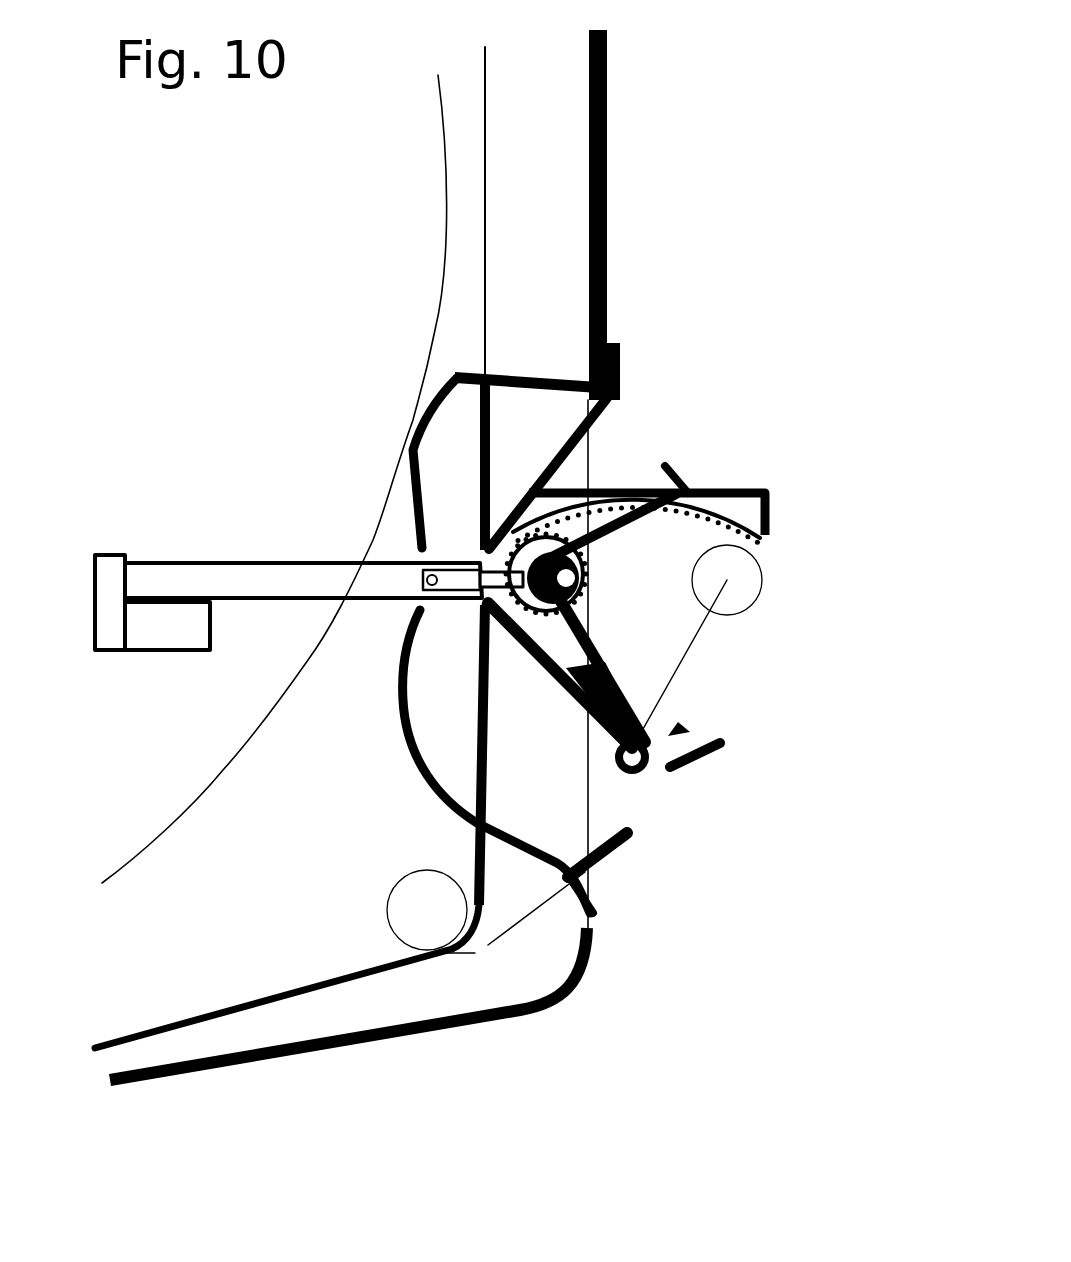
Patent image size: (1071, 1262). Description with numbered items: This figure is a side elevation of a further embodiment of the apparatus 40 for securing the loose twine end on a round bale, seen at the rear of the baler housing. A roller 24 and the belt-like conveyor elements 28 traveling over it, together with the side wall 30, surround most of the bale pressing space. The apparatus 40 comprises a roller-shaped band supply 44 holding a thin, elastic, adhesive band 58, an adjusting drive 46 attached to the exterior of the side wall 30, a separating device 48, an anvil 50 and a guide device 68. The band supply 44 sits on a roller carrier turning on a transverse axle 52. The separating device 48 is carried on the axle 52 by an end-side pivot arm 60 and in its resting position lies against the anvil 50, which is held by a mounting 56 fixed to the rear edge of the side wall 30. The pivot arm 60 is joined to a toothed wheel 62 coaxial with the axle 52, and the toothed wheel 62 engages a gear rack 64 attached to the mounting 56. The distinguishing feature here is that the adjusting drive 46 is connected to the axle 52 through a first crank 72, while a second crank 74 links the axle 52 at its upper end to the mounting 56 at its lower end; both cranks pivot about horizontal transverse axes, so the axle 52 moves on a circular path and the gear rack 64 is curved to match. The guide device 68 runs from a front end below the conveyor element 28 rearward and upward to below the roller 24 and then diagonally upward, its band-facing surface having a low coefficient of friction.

The roller 24 is at (417, 898).
The conveyor element 28 is at (473, 442).
The side wall 30 is at (558, 186).
The apparatus 40 is at (812, 396).
The band supply 44 is at (590, 613).
The adjusting drive 46 is at (203, 583).
The separating device 48 is at (687, 480).
The anvil 50 is at (712, 750).
The axle 52 is at (590, 570).
The mounting 56 is at (603, 420).
The band 58 is at (487, 782).
The pivot arm 60 is at (618, 503).
The toothed wheel 62 is at (590, 593).
The gear rack 64 is at (690, 537).
The guide device 68 is at (608, 860).
The first crank 72 is at (462, 563).
The second crank 74 is at (603, 675).